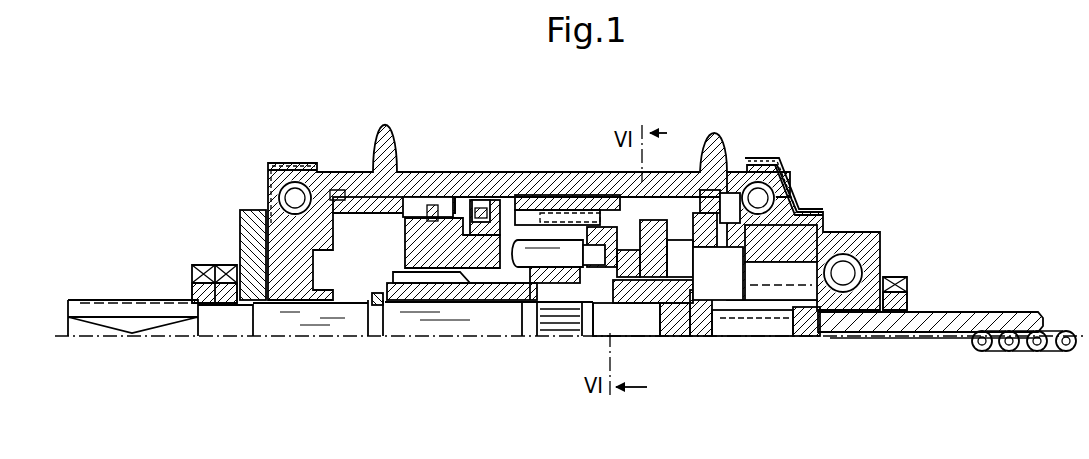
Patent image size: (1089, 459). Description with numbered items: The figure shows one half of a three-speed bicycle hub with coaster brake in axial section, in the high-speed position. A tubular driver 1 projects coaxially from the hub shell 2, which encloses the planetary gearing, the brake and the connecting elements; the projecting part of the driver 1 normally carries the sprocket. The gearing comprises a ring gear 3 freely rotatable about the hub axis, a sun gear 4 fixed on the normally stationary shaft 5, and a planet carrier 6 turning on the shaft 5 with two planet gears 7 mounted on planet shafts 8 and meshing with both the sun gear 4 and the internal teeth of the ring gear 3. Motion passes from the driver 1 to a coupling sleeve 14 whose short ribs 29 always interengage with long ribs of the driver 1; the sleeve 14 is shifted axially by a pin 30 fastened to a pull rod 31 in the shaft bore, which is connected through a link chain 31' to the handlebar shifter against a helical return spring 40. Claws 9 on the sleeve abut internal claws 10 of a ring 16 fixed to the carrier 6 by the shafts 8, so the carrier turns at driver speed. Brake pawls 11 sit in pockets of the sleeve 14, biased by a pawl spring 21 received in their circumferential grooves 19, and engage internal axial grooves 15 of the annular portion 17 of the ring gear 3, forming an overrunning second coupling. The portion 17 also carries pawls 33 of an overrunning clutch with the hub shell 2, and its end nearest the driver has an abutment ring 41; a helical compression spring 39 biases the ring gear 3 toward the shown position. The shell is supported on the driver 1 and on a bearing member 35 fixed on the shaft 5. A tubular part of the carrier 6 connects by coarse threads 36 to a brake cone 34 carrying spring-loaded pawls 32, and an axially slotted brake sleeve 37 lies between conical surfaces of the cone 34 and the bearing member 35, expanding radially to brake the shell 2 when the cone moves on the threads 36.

The driver 1 is at (802, 210).
The hub shell 2 is at (350, 180).
The ring gear 3 is at (532, 203).
The sun gear 4 is at (557, 337).
The shaft 5 is at (415, 332).
The planet carrier 6 is at (492, 300).
The planet gears 7 is at (550, 208).
The planet shafts 8 is at (515, 300).
The claws 9 is at (594, 297).
The internal claws 10 is at (625, 300).
The brake pawls 11 is at (615, 210).
The coupling sleeve 14 is at (669, 300).
The internal axial grooves 15 is at (718, 243).
The ring 16 is at (593, 213).
The annular portion 17 is at (666, 205).
The circumferential grooves 19 is at (623, 212).
The pawl spring 21 is at (652, 303).
The short ribs 29 is at (742, 312).
The pin 30 is at (705, 320).
The pull rod 31 is at (930, 354).
The link chain 31' is at (1024, 363).
The pawls 32 is at (475, 190).
The pawls 33 is at (724, 165).
The brake cone 34 is at (418, 218).
The bearing member 35 is at (282, 228).
The coarse threads 36 is at (395, 278).
The brake sleeve 37 is at (336, 192).
The helical compression spring 39 is at (790, 198).
The helical return spring 40 is at (818, 335).
The abutment ring 41 is at (750, 290).